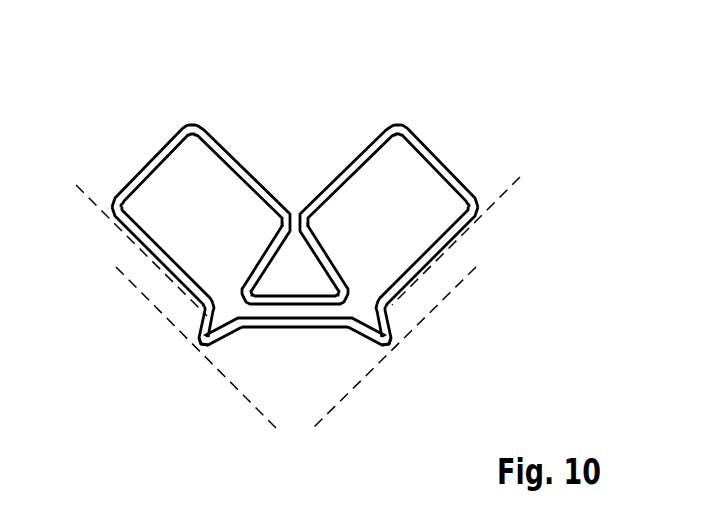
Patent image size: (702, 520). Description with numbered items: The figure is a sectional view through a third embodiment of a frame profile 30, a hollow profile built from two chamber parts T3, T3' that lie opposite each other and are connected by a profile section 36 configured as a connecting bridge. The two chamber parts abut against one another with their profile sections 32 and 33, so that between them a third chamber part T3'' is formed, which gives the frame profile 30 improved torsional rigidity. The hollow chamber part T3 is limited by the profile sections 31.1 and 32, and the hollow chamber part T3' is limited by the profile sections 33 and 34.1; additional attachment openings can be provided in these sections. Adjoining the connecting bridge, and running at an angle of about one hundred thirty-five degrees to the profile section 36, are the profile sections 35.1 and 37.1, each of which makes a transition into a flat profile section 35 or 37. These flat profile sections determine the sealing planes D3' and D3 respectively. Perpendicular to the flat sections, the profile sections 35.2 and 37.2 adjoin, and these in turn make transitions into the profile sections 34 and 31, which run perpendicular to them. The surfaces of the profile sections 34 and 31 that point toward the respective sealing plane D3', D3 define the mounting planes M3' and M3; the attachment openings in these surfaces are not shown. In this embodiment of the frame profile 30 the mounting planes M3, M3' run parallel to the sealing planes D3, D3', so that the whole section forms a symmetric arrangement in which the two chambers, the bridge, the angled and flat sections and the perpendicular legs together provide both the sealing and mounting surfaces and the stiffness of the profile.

The frame profile 30 is at (442, 58).
The profile section 31 is at (158, 260).
The profile section 31.1 is at (143, 167).
The profile section 32 is at (243, 165).
The profile section 33 is at (348, 165).
The profile section 34 is at (435, 260).
The profile section 34.1 is at (452, 167).
The flat profile section 35 is at (394, 350).
The profile section 35.1 is at (363, 358).
The profile section 35.2 is at (396, 316).
The profile section 36 is at (263, 328).
The flat profile section 37 is at (197, 350).
The profile section 37.1 is at (227, 358).
The profile section 37.2 is at (194, 317).
The chamber part T3 is at (195, 129).
The chamber part T3' is at (403, 128).
The third chamber part T3'' is at (295, 305).
The mounting plane M3 is at (122, 245).
The mounting plane M3' is at (476, 238).
The sealing plane D3 is at (179, 342).
The sealing plane D3' is at (415, 342).